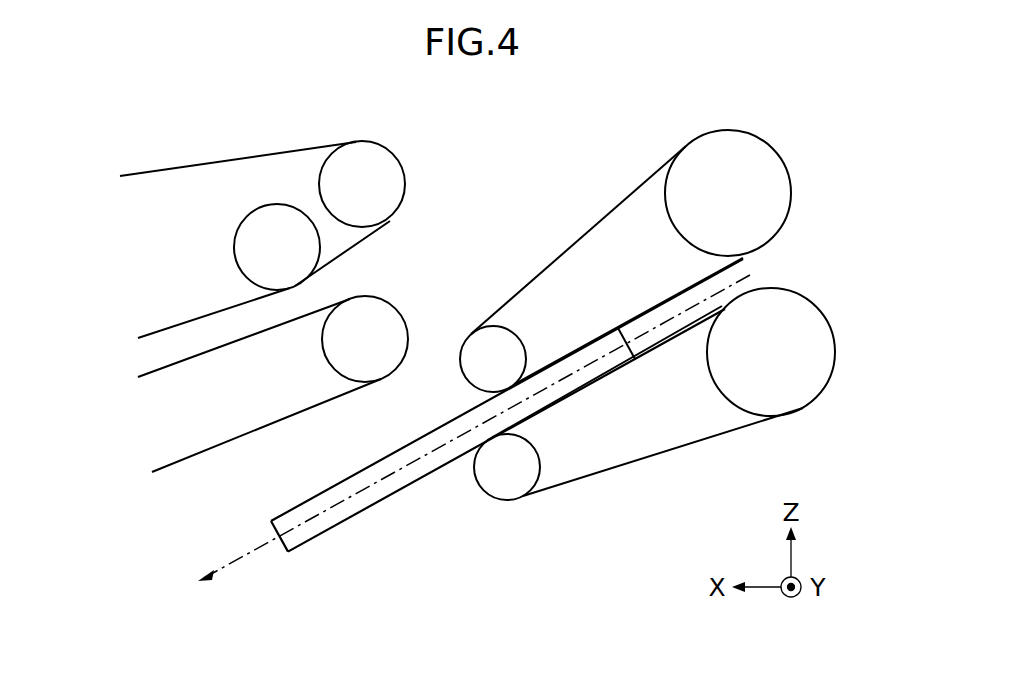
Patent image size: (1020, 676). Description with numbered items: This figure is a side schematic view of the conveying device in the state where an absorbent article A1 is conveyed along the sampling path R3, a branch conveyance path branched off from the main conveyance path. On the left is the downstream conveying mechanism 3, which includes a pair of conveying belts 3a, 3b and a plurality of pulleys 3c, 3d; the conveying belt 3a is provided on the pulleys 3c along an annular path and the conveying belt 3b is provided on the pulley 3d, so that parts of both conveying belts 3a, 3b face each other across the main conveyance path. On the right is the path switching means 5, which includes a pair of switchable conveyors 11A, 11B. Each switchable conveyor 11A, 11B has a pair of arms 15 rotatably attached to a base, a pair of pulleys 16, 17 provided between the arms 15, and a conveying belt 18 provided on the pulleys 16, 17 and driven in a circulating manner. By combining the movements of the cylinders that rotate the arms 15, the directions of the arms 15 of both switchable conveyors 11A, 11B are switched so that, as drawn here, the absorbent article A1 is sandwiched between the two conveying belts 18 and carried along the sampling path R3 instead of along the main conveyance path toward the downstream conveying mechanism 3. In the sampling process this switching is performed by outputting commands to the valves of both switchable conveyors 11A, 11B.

The downstream conveying mechanism 3 is at (238, 128).
The conveying belt 3a is at (160, 330).
The conveying belt 3b is at (195, 452).
The pulley 3c is at (322, 178).
The pulley 3d is at (322, 350).
The path switching means 5 is at (770, 116).
The switchable conveyor 11A is at (799, 141).
The switchable conveyor 11B is at (672, 492).
The arm 15 is at (560, 272).
The pulley 16 is at (672, 225).
The pulley 17 is at (522, 340).
The conveying belt 18 is at (581, 242).
The absorbent article A1 is at (408, 487).
The sampling path R3 is at (265, 546).